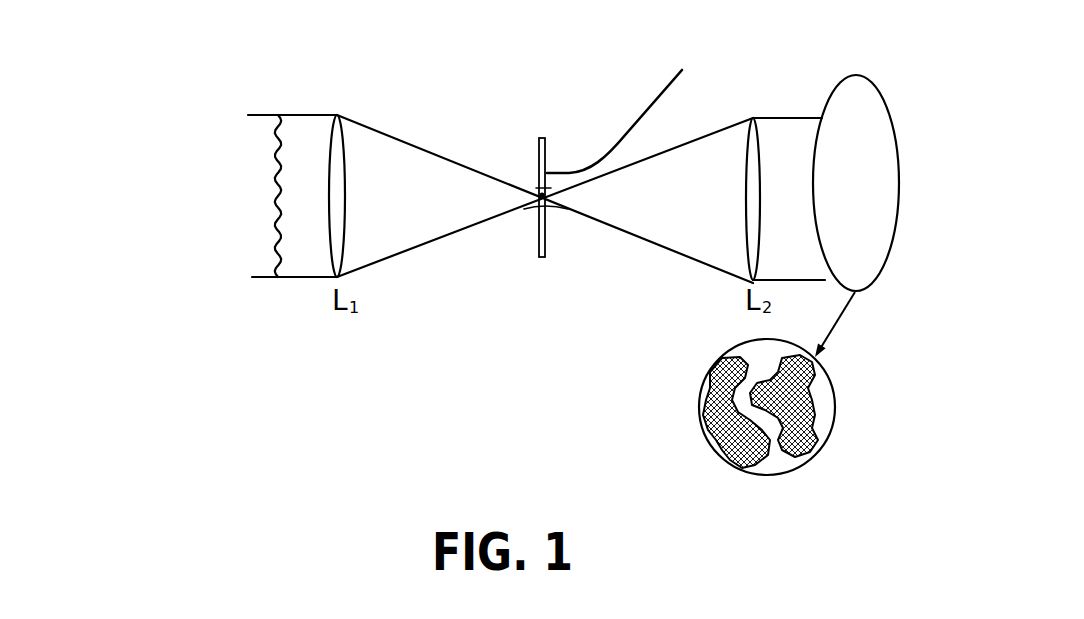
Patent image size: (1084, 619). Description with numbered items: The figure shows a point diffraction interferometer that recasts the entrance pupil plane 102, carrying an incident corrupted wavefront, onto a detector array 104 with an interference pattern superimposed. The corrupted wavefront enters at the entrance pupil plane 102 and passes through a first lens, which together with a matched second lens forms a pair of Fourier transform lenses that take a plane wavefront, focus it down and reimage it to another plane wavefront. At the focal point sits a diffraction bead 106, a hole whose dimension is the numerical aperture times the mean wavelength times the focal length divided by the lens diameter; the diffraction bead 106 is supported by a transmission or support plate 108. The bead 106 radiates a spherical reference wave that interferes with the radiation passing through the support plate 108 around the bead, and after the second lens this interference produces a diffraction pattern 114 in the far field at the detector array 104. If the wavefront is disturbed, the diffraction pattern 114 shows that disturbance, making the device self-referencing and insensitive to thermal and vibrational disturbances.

The entrance pupil plane 102 is at (262, 286).
The detector array 104 is at (675, 87).
The diffraction bead 106 is at (526, 178).
The support plate 108 is at (535, 269).
The diffraction pattern 114 is at (834, 437).